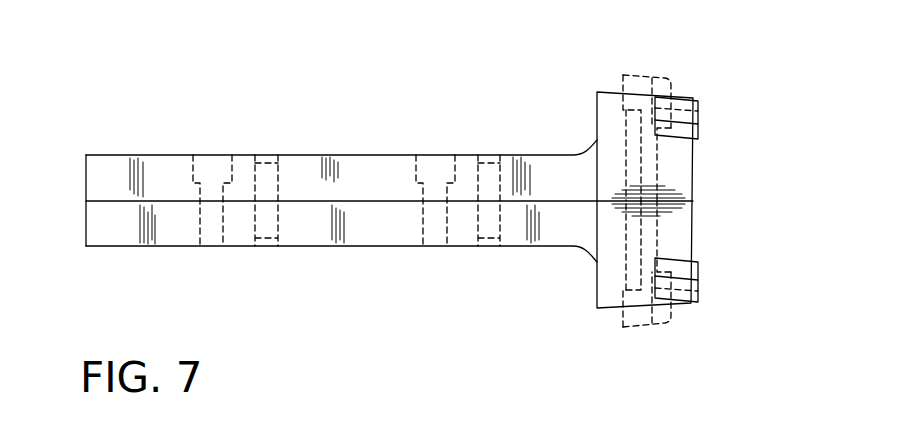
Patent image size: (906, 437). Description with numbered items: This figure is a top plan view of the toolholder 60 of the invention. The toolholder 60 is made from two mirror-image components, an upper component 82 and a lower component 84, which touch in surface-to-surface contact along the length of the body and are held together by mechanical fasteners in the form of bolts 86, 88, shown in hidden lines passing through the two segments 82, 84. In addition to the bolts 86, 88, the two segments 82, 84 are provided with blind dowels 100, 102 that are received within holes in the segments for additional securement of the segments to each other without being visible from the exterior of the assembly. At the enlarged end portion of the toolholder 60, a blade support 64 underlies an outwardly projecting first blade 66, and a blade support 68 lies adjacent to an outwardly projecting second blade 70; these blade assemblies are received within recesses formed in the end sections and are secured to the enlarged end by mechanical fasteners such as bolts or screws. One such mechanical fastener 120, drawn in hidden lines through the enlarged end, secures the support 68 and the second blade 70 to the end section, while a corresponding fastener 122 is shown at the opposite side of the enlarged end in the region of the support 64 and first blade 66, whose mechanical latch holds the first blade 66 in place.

The toolholder 60 is at (180, 263).
The upper component 82 is at (350, 168).
The lower component 84 is at (352, 228).
The bolt 86 is at (213, 157).
The bolt 88 is at (430, 157).
The blind dowel 100 is at (263, 246).
The blind dowel 102 is at (492, 246).
The mechanical fastener 120 is at (638, 327).
The upper dovetail fastener 122 is at (640, 75).
The first blade 66 is at (698, 112).
The blade support 64 is at (698, 125).
The blade support 68 is at (698, 270).
The second blade 70 is at (698, 285).